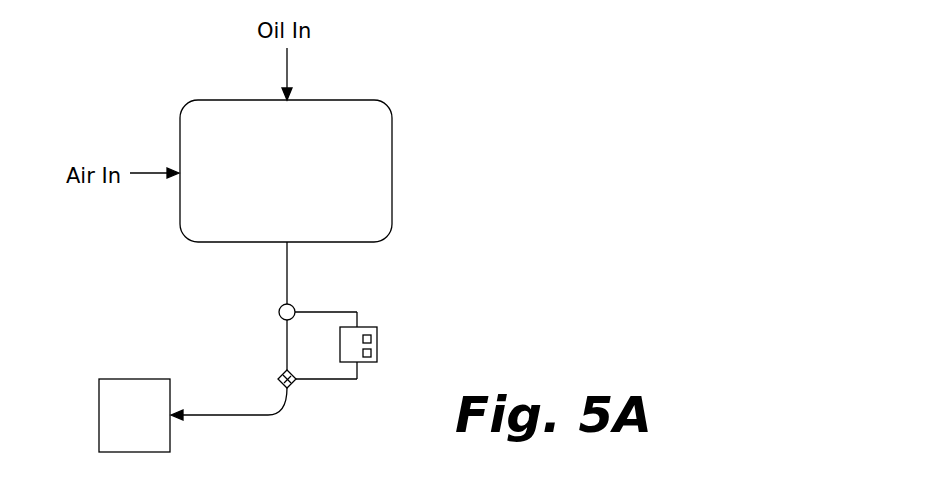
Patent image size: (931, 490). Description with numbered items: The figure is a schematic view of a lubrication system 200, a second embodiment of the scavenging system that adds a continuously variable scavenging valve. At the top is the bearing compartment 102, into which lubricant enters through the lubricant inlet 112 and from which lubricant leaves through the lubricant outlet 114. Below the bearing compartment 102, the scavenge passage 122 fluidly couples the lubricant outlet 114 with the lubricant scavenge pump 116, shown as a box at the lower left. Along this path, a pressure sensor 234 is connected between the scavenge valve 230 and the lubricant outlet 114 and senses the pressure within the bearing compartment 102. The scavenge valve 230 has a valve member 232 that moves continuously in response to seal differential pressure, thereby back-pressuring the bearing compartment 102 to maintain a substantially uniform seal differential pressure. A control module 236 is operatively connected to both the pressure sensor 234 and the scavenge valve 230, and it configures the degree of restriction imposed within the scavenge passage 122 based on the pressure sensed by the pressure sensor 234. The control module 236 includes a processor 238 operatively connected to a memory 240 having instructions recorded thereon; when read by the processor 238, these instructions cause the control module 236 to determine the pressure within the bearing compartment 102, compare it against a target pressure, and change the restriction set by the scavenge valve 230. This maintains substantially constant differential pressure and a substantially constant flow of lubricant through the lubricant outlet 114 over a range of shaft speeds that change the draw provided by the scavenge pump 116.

The lubrication system 200 is at (140, 52).
The bearing compartment 102 is at (308, 186).
The lubricant inlet 112 is at (308, 99).
The lubricant outlet 114 is at (294, 247).
The lubricant scavenge pump 116 is at (155, 429).
The scavenge passage 122 is at (273, 416).
The continuously variable scavenging valve 230 is at (273, 394).
The valve member 232 is at (283, 374).
The pressure sensor 234 is at (280, 306).
The control module 236 is at (363, 364).
The processor 238 is at (372, 336).
The memory 240 is at (372, 353).